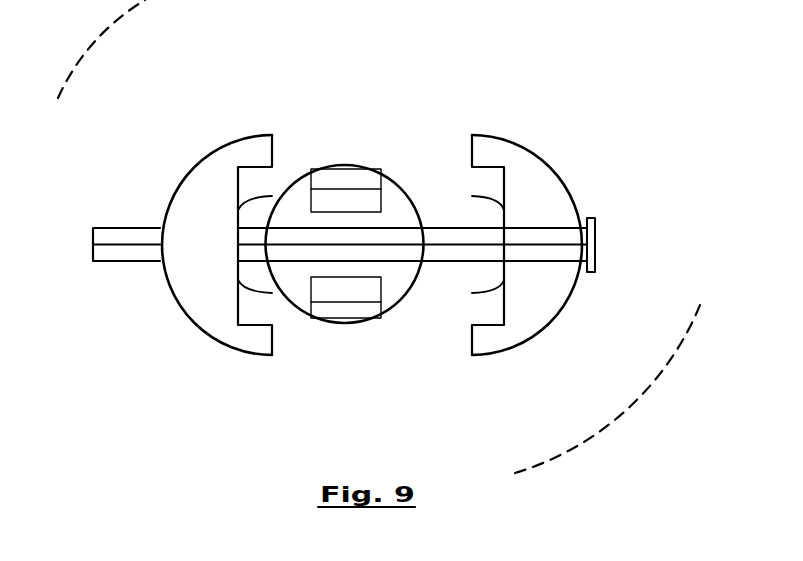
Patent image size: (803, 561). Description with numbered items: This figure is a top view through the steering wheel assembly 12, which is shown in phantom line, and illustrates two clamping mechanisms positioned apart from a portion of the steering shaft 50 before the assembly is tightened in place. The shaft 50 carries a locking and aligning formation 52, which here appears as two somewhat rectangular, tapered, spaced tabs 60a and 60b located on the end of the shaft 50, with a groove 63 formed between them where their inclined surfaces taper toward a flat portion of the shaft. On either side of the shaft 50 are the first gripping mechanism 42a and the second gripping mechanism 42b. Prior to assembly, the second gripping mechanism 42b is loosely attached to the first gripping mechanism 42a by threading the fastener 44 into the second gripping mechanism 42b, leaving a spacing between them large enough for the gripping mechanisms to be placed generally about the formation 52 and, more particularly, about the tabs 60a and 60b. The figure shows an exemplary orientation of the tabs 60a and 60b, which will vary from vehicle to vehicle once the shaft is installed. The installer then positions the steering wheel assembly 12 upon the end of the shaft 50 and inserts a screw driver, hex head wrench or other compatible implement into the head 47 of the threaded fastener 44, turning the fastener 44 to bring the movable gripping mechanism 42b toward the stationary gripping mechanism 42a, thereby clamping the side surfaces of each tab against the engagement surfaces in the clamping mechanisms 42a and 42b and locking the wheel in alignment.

The steering wheel assembly 12 is at (555, 452).
The first gripping mechanism 42a is at (526, 185).
The second gripping mechanism 42b is at (203, 182).
The threaded fastener 44 is at (458, 233).
The head of the threaded fastener 47 is at (597, 258).
The steering shaft 50 is at (409, 297).
The locking and aligning formation 52 is at (306, 289).
The tab 60a is at (350, 316).
The tab 60b is at (327, 173).
The groove 63 is at (357, 218).